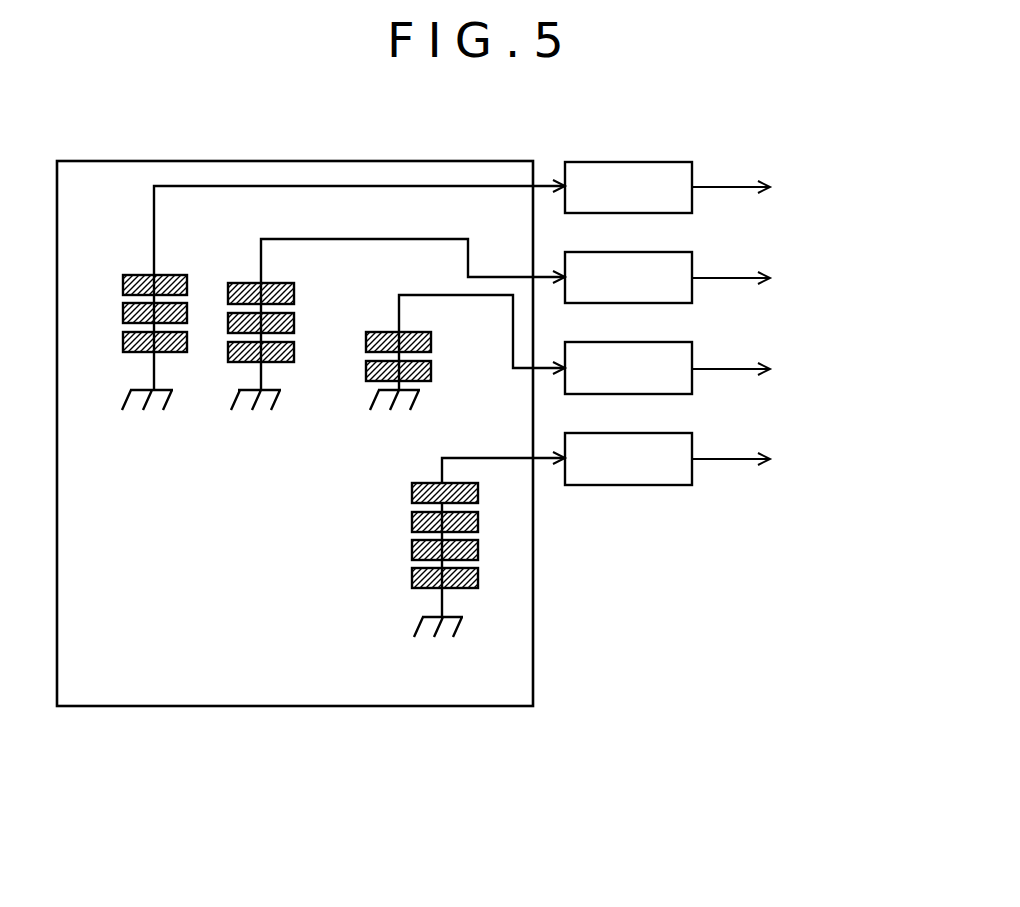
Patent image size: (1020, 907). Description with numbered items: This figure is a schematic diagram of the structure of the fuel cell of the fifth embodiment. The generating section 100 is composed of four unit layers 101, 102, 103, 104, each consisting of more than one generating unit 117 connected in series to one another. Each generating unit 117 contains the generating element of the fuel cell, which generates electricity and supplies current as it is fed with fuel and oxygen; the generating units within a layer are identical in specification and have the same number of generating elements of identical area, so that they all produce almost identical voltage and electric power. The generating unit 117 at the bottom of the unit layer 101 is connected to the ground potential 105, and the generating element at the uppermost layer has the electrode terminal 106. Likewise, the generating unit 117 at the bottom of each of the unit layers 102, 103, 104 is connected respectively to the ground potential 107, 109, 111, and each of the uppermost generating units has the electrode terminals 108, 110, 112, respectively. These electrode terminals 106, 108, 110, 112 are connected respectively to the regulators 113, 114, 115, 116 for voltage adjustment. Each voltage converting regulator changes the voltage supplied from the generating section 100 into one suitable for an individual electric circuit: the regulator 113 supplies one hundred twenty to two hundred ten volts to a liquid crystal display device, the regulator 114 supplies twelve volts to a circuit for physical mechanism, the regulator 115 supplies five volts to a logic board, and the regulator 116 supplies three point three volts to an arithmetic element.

The generating section 100 is at (150, 721).
The unit layer 101 is at (141, 422).
The unit layer 102 is at (250, 422).
The unit layer 103 is at (393, 426).
The unit layer 104 is at (431, 648).
The ground potential 105 is at (122, 410).
The electrode terminal 106 is at (155, 216).
The ground potential 107 is at (231, 410).
The electrode terminal 108 is at (262, 254).
The ground potential 109 is at (370, 410).
The electrode terminal 110 is at (398, 304).
The ground potential 111 is at (414, 637).
The electrode terminal 112 is at (443, 470).
The regulator 113 is at (666, 160).
The regulator 114 is at (666, 251).
The regulator 115 is at (666, 341).
The regulator 116 is at (666, 432).
The generating unit 117 is at (122, 342).